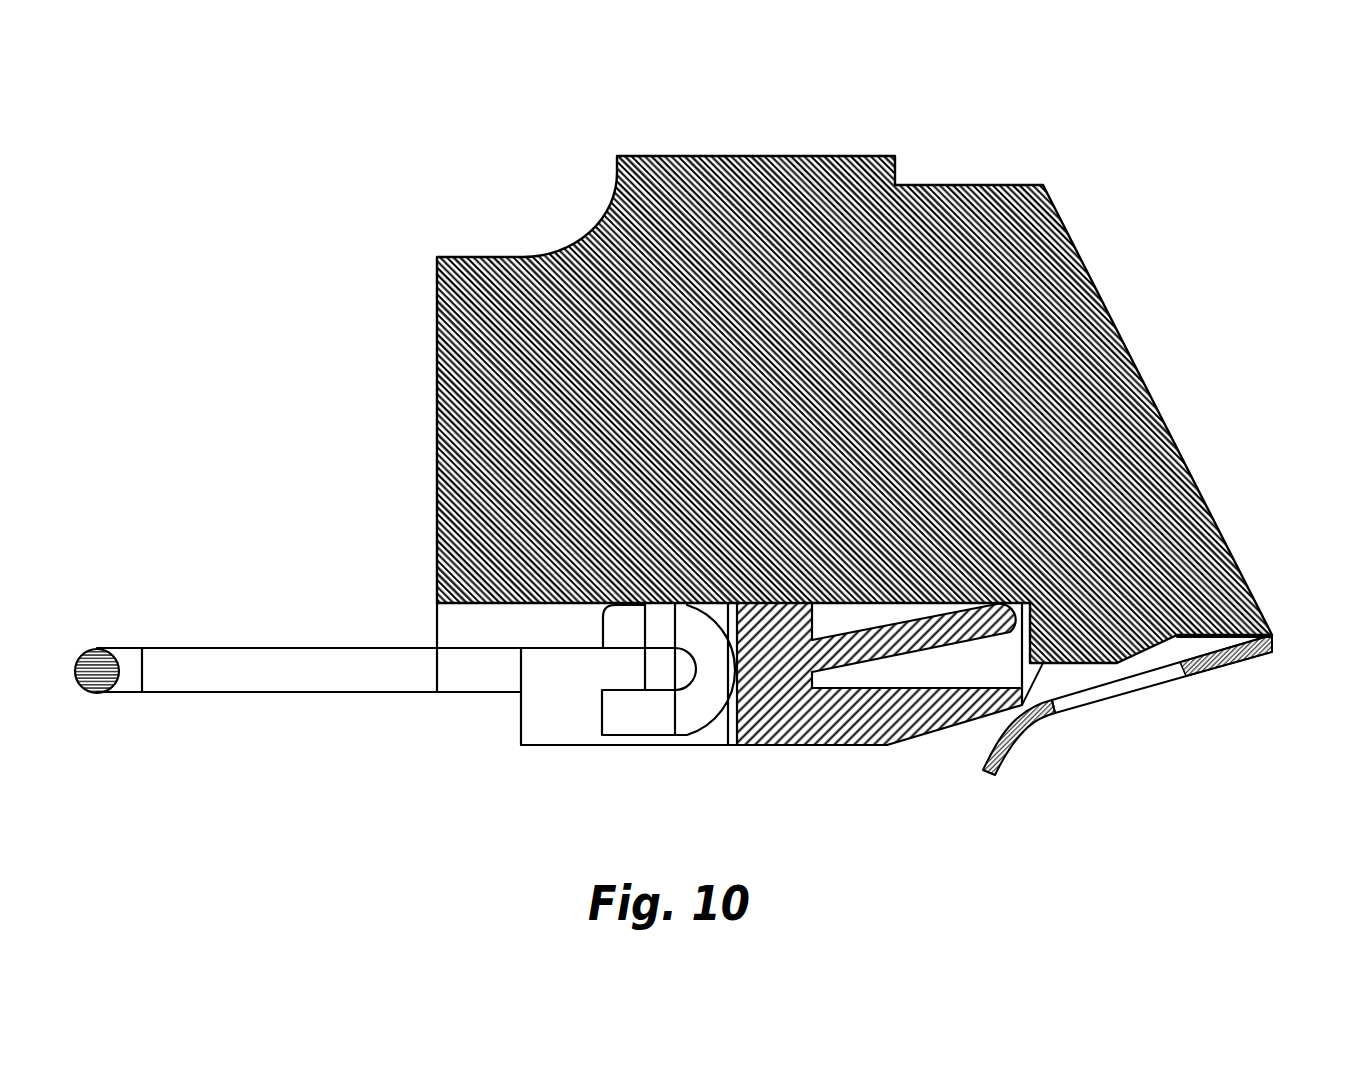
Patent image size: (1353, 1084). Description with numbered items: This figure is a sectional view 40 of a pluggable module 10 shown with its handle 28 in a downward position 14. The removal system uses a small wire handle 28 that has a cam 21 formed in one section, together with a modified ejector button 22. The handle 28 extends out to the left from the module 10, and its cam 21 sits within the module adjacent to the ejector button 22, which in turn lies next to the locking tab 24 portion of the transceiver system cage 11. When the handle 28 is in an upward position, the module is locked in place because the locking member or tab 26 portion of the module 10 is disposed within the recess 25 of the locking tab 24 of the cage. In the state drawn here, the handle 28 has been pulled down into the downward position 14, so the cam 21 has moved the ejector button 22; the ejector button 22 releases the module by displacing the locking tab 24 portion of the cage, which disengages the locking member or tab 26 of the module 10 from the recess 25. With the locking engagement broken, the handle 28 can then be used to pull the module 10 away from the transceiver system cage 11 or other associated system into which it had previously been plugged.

The sectional view 40 is at (893, 113).
The pluggable module 10 is at (1066, 222).
The transceiver system cage 11 is at (1252, 650).
The downward position 14 is at (228, 626).
The handle 28 is at (95, 650).
The cam 21 is at (688, 717).
The ejector button 22 is at (845, 745).
The locking tab 24 is at (1008, 743).
The recess 25 is at (1068, 702).
The locking member 26 is at (1150, 653).